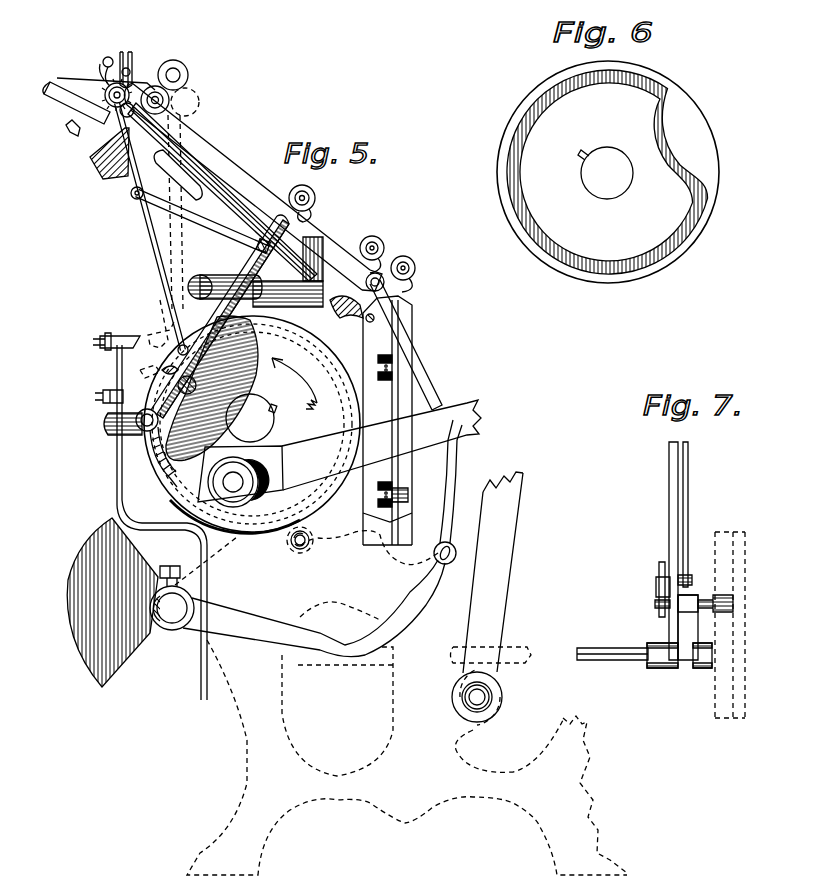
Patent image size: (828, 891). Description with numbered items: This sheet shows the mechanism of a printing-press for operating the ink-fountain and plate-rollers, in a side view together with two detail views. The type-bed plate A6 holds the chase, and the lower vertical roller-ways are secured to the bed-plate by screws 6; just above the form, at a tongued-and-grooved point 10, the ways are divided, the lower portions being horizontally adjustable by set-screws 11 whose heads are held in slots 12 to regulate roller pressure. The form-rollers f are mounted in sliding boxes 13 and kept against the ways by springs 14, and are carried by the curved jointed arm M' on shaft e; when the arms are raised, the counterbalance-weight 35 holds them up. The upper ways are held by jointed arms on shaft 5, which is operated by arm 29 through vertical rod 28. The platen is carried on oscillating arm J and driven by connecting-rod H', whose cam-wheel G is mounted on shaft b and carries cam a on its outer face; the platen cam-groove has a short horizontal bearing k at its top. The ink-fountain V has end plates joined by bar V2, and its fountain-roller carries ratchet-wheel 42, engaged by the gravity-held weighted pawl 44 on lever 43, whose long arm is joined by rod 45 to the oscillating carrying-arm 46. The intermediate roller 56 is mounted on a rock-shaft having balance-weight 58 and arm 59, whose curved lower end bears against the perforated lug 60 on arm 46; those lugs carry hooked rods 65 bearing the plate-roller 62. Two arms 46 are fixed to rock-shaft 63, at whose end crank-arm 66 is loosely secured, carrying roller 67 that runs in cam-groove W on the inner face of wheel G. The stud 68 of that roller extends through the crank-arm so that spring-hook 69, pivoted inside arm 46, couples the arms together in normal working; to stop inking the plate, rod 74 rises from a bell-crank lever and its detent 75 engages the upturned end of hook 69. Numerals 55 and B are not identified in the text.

In FIG. 5, the shaft 5 is at (258, 320).
In FIG. 5, the shaft b is at (251, 418).
In FIG. 5, the cam a is at (240, 476).
In FIG. 5, the connecting-rod H' is at (299, 465).
In FIG. 5, the curved jointed arm M' is at (337, 528).
In FIG. 5, the shaft e is at (172, 598).
In FIG. 5, the counterbalance-weight 35 is at (110, 540).
In FIG. 5, the rod 74 is at (117, 462).
In FIG. 5, the detent 75 is at (112, 337).
In FIG. 5, the stud 68 is at (145, 433).
In FIG. 7, the stud 68 is at (658, 603).
In FIG. 5, the spring-hook 69 is at (165, 372).
In FIG. 7, the spring-hook 69 is at (658, 570).
In FIG. 5, the crank-arm 66 is at (200, 428).
In FIG. 7, the crank-arm 66 is at (697, 624).
In FIG. 5, the vertical rod 28 is at (205, 311).
In FIG. 5, the arm 29 is at (205, 276).
In FIG. 5, the carrying-arm 46 is at (250, 270).
In FIG. 7, the carrying-arm 46 is at (673, 513).
In FIG. 5, the rod 45 is at (225, 235).
In FIG. 5, the arm 59 is at (203, 185).
In FIG. 5, the ink-fountain V is at (224, 224).
In FIG. 5, the bar V2 is at (50, 88).
In FIG. 5, the perforated lug 60 is at (272, 248).
In FIG. 7, the perforated lug 60 is at (692, 577).
In FIG. 5, the sliding box 13 is at (385, 294).
In FIG. 5, the tongued-and-grooved point 10 is at (415, 330).
In FIG. 5, the plate-roller 62 is at (293, 196).
In FIG. 5, the form-roller f is at (393, 261).
In FIG. 5, the spring 14 is at (346, 299).
In FIG. 5, the screw 6 is at (373, 321).
In FIG. 5, the type-bed plate A6 is at (377, 420).
In FIG. 5, the set-screw 11 is at (385, 431).
In FIG. 5, the slot 12 is at (383, 381).
In FIG. 5, the ratchet-wheel 42 is at (105, 95).
In FIG. 5, the weighted pawl 44 is at (103, 64).
In FIG. 5, the intermediate roller 56 is at (134, 58).
In FIG. 5, the roller 55 is at (182, 70).
In FIG. 5, the balance-weight 58 is at (98, 166).
In FIG. 5, the lever 43 is at (130, 194).
In FIG. 5, the pin B is at (306, 548).
In FIG. 5, the oscillating arm J is at (493, 572).
In FIG. 5, the horizontal bearing k is at (490, 692).
In FIG. 6, the cam-groove W is at (680, 233).
In FIG. 6, the cam-wheel G is at (605, 154).
In FIG. 7, the cam-wheel G is at (733, 656).
In FIG. 7, the hooked rod 65 is at (691, 477).
In FIG. 7, the roller 67 is at (733, 602).
In FIG. 7, the rock-shaft 63 is at (608, 652).